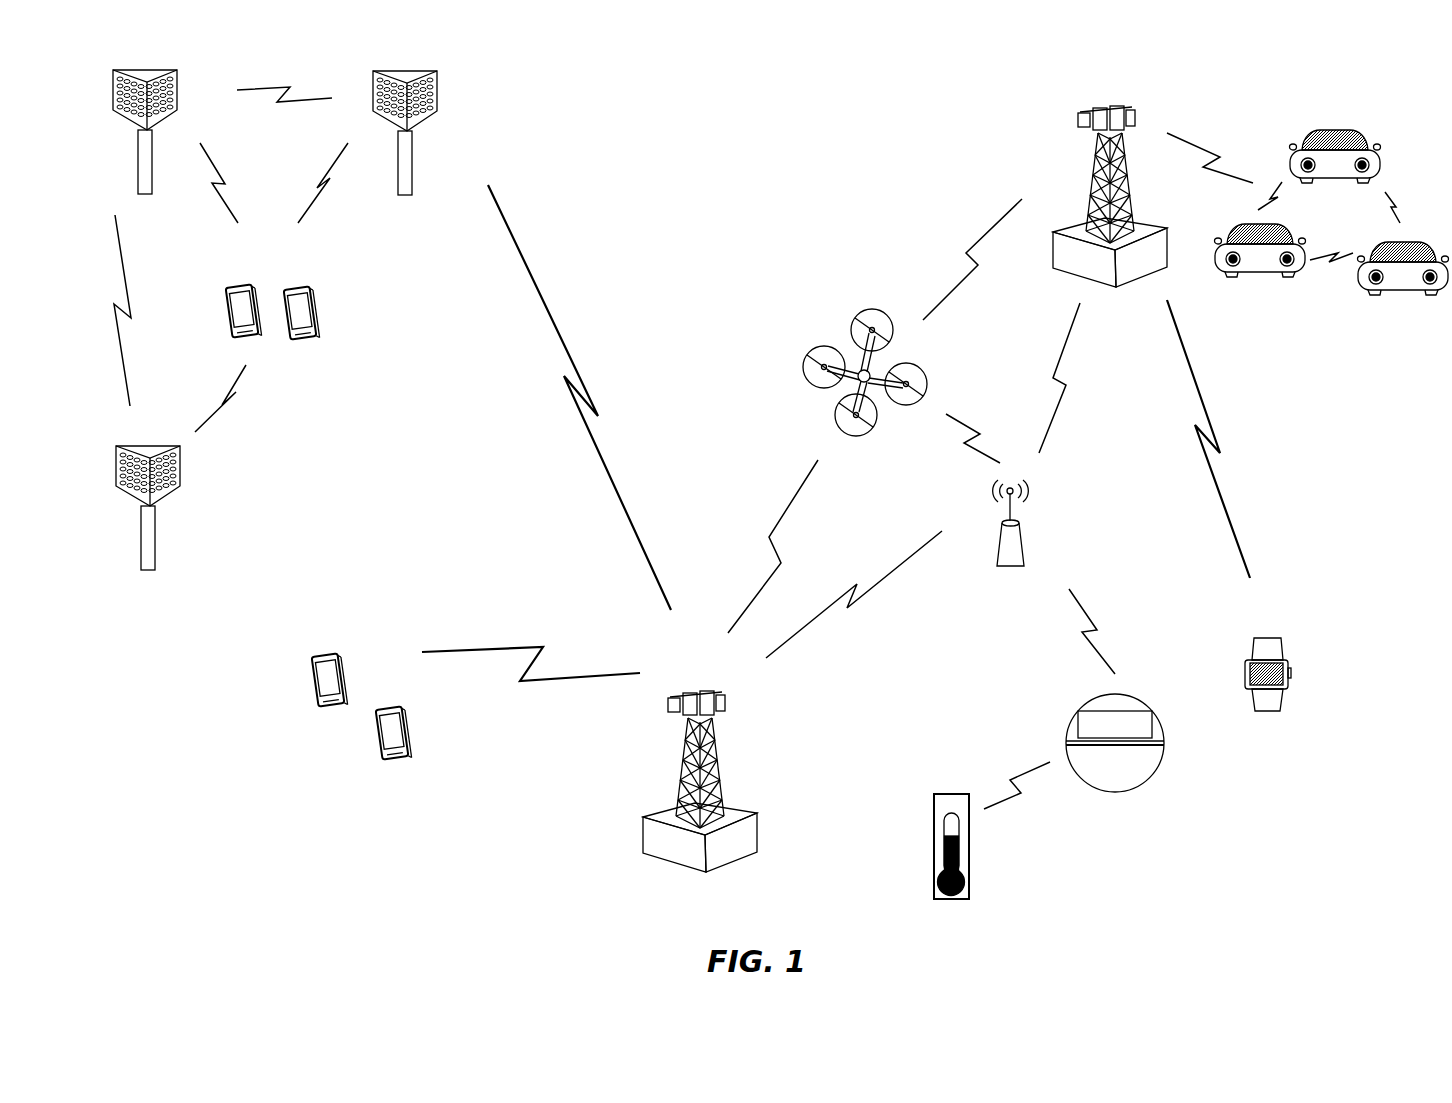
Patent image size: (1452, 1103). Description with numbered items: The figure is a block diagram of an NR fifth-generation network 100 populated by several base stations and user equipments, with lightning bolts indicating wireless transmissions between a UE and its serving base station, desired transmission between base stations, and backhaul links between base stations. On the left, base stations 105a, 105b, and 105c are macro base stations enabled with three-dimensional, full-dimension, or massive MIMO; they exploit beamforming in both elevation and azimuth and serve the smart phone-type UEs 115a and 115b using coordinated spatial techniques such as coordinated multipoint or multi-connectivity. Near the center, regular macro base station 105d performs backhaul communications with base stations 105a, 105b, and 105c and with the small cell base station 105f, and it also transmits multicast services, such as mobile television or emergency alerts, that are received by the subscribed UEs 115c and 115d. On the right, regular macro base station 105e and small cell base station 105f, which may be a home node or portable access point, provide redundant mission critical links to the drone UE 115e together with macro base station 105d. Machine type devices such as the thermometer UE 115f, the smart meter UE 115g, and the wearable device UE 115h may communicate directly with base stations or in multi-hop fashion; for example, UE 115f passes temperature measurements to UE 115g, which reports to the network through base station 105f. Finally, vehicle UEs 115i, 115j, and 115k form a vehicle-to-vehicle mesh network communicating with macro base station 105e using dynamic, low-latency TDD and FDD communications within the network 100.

The 5G network 100 is at (858, 102).
The base station 105a is at (138, 168).
The base station 105b is at (408, 168).
The base station 105c is at (143, 560).
The macro base station 105d is at (662, 858).
The macro base station 105e is at (1072, 272).
The small cell base station 105f is at (998, 559).
The UE 115a is at (230, 293).
The UE 115b is at (313, 298).
The UE 115c is at (313, 659).
The UE 115d is at (405, 719).
The UE 115e is at (801, 368).
The UE 115f is at (971, 889).
The UE 115g is at (1137, 787).
The UE 115h is at (1283, 705).
The UE 115i is at (1353, 130).
The UE 115j is at (1423, 292).
The UE 115k is at (1235, 275).